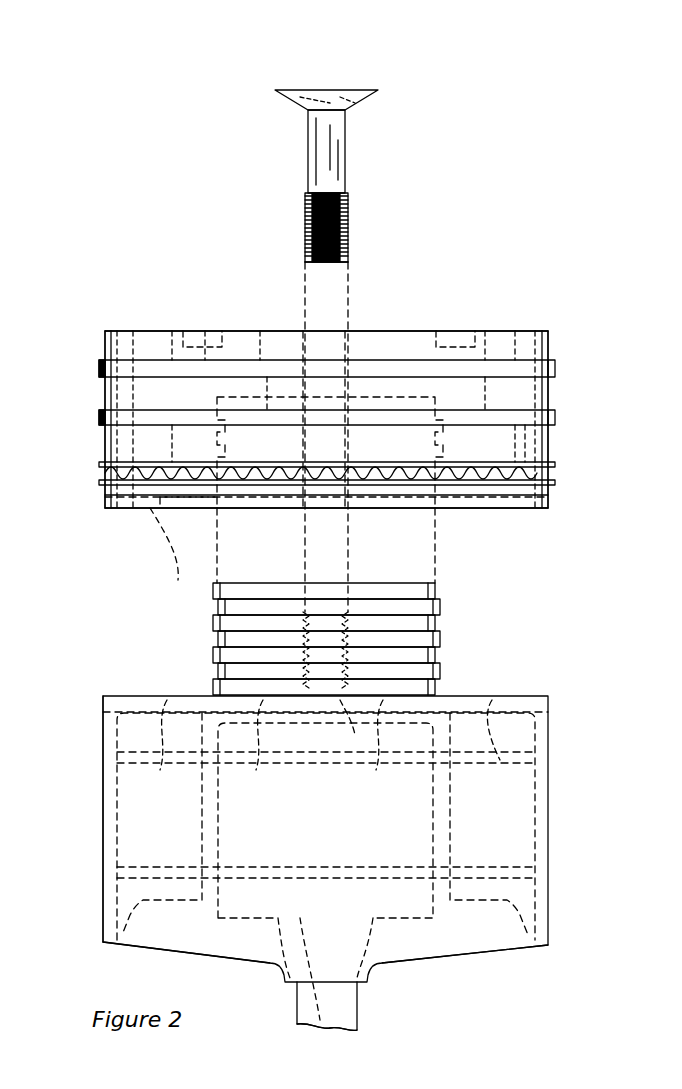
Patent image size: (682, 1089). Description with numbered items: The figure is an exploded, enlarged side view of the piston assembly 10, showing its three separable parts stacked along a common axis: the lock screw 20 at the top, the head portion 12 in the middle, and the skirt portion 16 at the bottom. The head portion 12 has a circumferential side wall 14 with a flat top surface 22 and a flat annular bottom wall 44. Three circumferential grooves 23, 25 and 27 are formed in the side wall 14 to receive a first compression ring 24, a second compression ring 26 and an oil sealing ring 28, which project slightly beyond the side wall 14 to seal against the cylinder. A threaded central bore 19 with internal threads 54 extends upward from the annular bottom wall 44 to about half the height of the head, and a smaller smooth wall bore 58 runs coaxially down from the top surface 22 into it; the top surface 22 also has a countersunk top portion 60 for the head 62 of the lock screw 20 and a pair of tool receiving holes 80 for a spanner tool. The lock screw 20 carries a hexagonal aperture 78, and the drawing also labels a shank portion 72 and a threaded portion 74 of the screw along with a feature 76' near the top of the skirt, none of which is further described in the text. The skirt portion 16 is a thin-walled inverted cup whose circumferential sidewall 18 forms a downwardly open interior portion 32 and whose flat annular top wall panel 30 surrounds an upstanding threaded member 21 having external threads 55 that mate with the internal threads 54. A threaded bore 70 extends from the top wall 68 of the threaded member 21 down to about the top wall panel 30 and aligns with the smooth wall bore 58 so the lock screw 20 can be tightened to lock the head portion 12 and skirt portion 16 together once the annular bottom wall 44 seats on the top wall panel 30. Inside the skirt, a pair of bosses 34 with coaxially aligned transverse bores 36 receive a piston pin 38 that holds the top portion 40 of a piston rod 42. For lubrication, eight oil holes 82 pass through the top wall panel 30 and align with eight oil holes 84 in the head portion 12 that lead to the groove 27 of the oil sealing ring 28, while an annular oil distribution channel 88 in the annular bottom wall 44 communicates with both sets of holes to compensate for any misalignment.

The piston assembly 10 is at (502, 196).
The head portion 12 is at (122, 334).
The circumferential side wall 14 is at (103, 337).
The skirt portion 16 is at (182, 935).
The circumferential sidewall 18 is at (115, 735).
The threaded central bore 19 is at (380, 442).
The lock screw 20 is at (350, 311).
The threaded member 21 is at (300, 609).
The top surface 22 is at (147, 330).
The circumferential groove 23 is at (553, 378).
The first compression ring 24 is at (101, 343).
The circumferential groove 25 is at (553, 420).
The second compression ring 26 is at (101, 416).
The circumferential groove 27 is at (556, 488).
The oil sealing ring 28 is at (101, 472).
The annular top wall panel 30 is at (530, 694).
The interior portion 32 is at (468, 942).
The bosses 34 is at (548, 905).
The transverse bore 36 is at (515, 753).
The piston pin 38 is at (497, 842).
The top portion 40 is at (320, 1030).
The piston rod 42 is at (346, 1014).
The annular bottom wall 44 is at (120, 510).
The internal threads 54 is at (212, 508).
The external threads 55 is at (214, 600).
The smooth wall bore 58 is at (302, 350).
The countersunk top portion 60 is at (350, 350).
The head 62 is at (352, 92).
The top wall 68 is at (430, 583).
The threaded bore 70 is at (318, 612).
The screw threads 72 is at (306, 212).
The threaded shank 74 is at (349, 211).
The opening 76' is at (335, 726).
The hexagonal aperture 78 is at (328, 86).
The tool receiving holes 80 is at (207, 330).
The oil holes 82 is at (492, 700).
The oil holes 84 is at (116, 510).
The annular oil distribution channel 88 is at (155, 508).